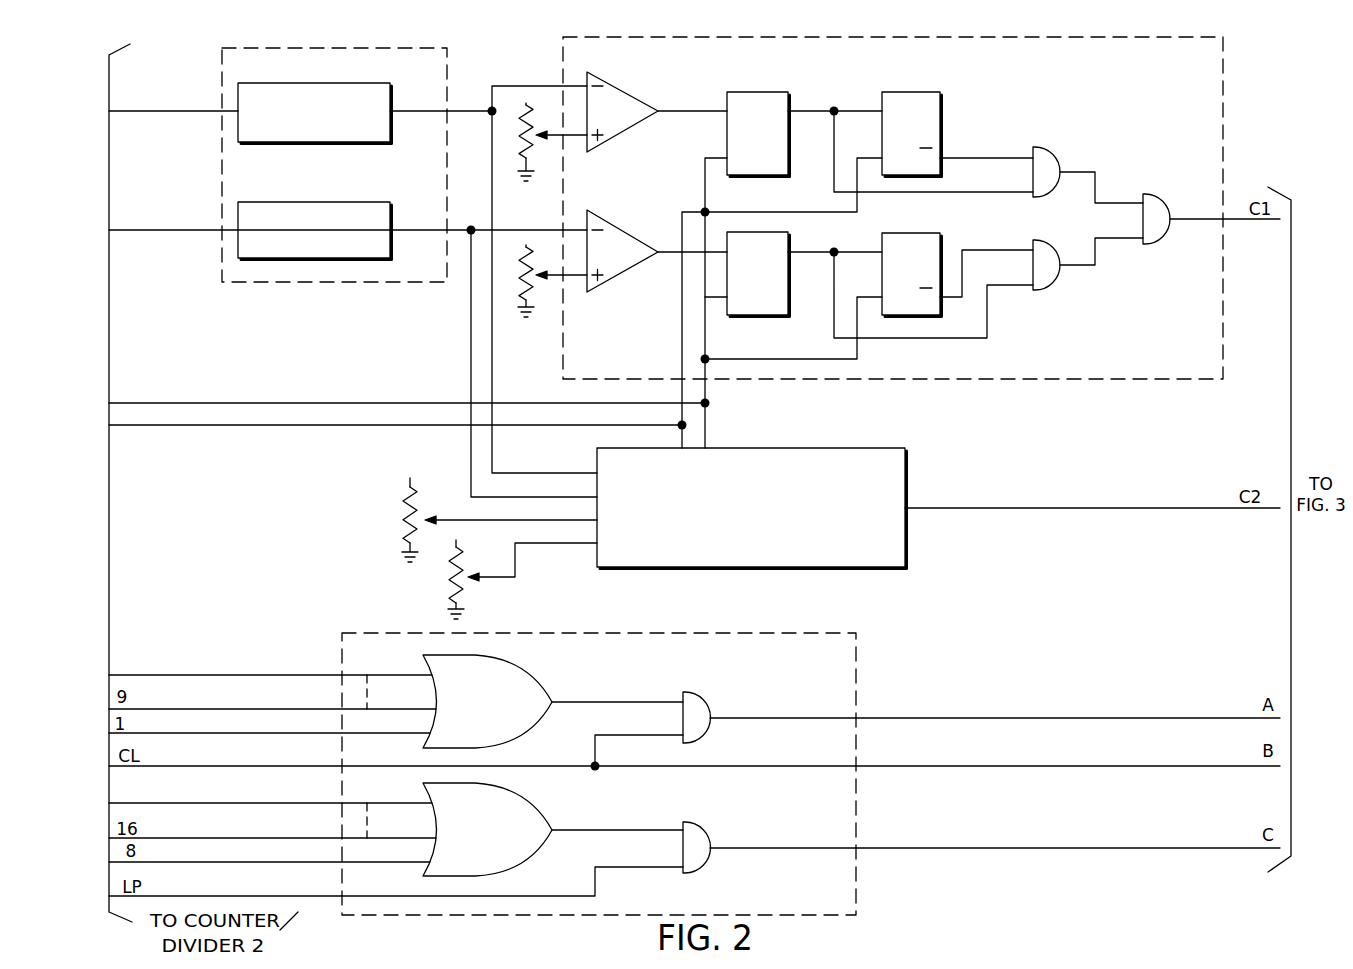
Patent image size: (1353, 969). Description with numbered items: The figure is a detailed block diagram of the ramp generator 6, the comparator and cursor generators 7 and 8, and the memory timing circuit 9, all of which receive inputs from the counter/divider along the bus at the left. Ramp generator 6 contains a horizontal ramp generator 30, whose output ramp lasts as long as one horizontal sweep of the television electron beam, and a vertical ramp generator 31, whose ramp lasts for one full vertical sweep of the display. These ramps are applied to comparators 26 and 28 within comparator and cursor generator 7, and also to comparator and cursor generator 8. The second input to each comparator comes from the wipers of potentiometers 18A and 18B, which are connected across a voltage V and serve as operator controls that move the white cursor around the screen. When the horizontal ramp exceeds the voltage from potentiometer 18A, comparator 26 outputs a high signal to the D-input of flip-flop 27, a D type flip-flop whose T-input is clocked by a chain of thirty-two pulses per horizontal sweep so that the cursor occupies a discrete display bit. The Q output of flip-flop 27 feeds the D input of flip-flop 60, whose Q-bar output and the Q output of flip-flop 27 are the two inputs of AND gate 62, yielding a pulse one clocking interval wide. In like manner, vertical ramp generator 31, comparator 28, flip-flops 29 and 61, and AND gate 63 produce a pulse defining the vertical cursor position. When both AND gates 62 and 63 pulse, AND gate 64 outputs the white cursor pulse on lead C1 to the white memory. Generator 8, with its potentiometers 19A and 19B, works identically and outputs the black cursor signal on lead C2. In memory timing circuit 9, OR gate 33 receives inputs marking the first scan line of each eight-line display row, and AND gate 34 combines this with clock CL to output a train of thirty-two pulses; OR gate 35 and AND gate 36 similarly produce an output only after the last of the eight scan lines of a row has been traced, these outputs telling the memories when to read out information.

The ramp generator 6 is at (334, 177).
The comparator and cursor generator 7 is at (893, 242).
The comparator and cursor generator 8 is at (815, 448).
The memory timing circuit 9 is at (599, 762).
The potentiometer 18A is at (539, 134).
The potentiometer 18B is at (538, 273).
The potentiometer 19A is at (481, 512).
The potentiometer 19B is at (503, 571).
The comparator 26 is at (617, 133).
The flip-flop 27 is at (786, 96).
The comparator 28 is at (617, 275).
The flip-flop 29 is at (789, 305).
The horizontal ramp generator 30 is at (391, 132).
The vertical ramp generator 31 is at (391, 250).
The OR gate 33 is at (520, 667).
The AND gate 34 is at (690, 694).
The OR gate 35 is at (520, 795).
The AND gate 36 is at (690, 824).
The flip-flop 60 is at (941, 93).
The flip-flop 61 is at (941, 233).
The AND gate 62 is at (1040, 149).
The AND gate 63 is at (1040, 242).
The AND gate 64 is at (1148, 196).